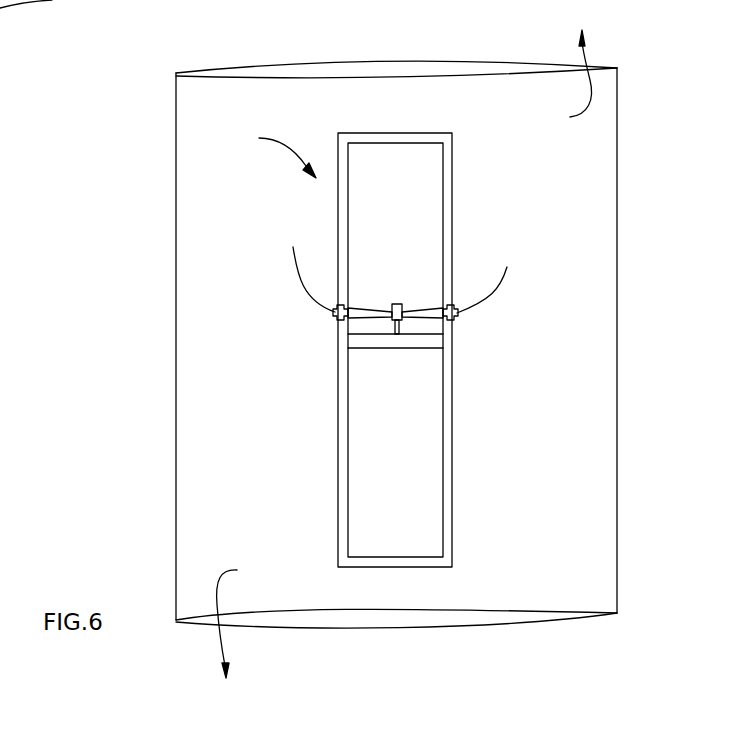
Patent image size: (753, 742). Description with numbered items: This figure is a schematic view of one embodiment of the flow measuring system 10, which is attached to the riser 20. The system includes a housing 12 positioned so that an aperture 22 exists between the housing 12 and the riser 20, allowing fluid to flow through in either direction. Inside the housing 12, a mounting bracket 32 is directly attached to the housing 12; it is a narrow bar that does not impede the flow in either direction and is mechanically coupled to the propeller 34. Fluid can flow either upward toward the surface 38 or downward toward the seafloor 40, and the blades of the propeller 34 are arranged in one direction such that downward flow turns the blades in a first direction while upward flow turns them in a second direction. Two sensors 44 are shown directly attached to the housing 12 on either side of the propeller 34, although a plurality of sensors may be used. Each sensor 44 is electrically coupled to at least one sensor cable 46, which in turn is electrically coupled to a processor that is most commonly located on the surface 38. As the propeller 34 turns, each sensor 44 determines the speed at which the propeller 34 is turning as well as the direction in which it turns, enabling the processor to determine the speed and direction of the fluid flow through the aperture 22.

The flow measuring system 10 is at (270, 152).
The housing 12 is at (453, 506).
The riser 20 is at (300, 85).
The aperture 22 is at (403, 212).
The mounting bracket 32 is at (393, 350).
The propeller 34 is at (428, 306).
The surface 38 is at (562, 80).
The seafloor 40 is at (245, 618).
The sensor 44 is at (335, 315).
The sensor cable 46 is at (300, 290).